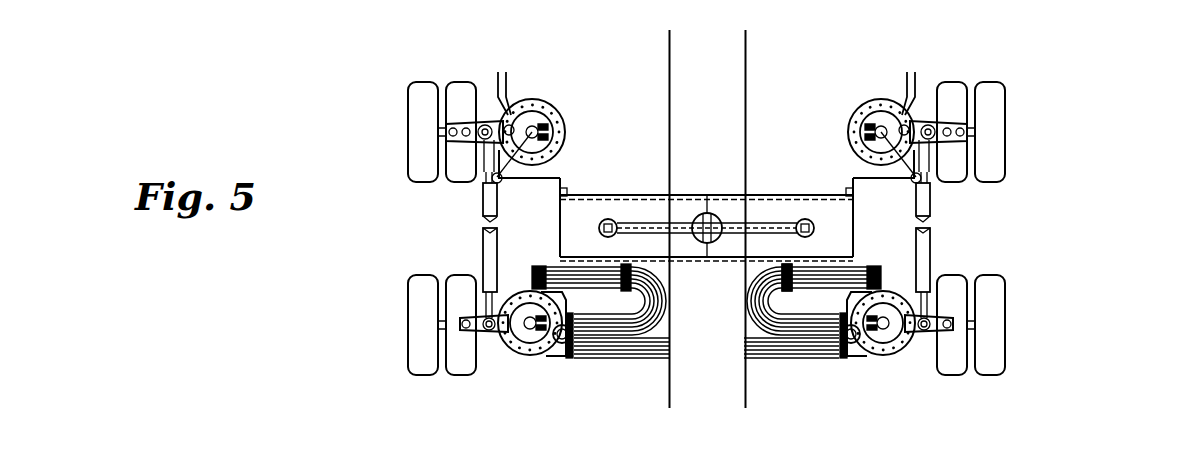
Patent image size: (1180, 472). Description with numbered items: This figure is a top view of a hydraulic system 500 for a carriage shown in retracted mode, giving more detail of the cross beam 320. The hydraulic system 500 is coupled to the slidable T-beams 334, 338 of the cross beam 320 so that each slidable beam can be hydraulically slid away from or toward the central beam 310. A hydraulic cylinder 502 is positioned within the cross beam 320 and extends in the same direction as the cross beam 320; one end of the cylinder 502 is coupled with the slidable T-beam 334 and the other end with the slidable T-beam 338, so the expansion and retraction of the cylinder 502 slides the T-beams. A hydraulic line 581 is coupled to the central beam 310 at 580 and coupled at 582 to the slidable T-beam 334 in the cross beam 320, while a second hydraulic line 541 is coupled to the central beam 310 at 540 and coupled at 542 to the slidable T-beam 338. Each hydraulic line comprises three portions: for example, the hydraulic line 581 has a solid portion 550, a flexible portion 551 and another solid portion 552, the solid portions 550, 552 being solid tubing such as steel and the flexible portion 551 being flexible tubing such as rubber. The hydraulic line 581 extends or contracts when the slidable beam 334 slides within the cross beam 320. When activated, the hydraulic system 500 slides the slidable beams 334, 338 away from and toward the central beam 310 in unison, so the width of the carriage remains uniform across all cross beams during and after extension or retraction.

The hydraulic system 500 is at (1058, 97).
The central beam 310 is at (746, 387).
The cross beam 320 is at (580, 193).
The hydraulic cylinder 502 is at (740, 222).
The slidable T-beam 338 is at (508, 207).
The slidable T-beam 334 is at (933, 205).
The coupling point on central beam 540 is at (668, 357).
The hydraulic line 541 is at (553, 358).
The coupling point on slidable T-beam 542 is at (533, 273).
The solid portion 550 is at (814, 360).
The flexible portion 551 is at (760, 298).
The solid portion 552 is at (848, 270).
The coupling point on central beam 580 is at (745, 353).
The hydraulic line 581 is at (903, 350).
The coupling point on slidable T-beam 582 is at (880, 268).